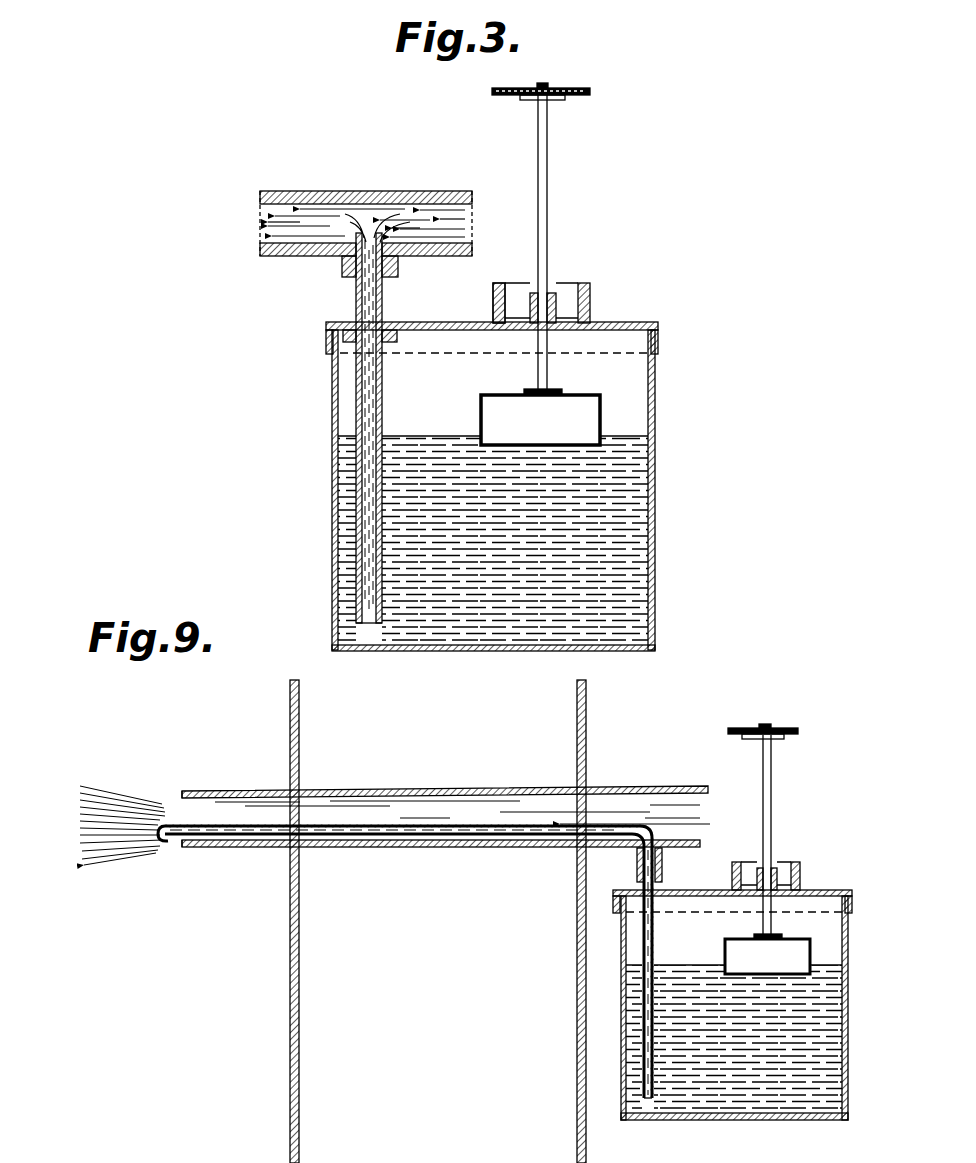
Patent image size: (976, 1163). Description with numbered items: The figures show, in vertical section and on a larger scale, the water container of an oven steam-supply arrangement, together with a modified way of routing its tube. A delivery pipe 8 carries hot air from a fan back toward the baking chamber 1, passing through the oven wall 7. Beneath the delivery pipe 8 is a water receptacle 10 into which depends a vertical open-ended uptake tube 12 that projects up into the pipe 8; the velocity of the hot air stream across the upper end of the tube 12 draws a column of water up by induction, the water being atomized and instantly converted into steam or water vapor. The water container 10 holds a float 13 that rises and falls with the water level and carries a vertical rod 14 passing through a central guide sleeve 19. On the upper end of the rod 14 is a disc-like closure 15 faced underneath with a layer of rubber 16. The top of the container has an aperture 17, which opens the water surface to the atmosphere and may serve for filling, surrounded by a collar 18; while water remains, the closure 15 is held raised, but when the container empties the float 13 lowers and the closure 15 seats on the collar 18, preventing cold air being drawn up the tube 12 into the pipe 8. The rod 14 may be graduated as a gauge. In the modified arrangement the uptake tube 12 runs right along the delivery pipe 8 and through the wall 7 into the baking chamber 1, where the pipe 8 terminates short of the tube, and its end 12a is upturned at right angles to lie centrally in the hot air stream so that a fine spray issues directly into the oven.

In FIG. 9, the baking chamber 1 is at (262, 746).
In FIG. 9, the oven wall 7 is at (548, 730).
In FIG. 3, the delivery pipe 8 is at (340, 191).
In FIG. 9, the delivery pipe 8 is at (643, 788).
In FIG. 3, the water receptacle 10 is at (333, 508).
In FIG. 9, the water receptacle 10 is at (846, 1116).
In FIG. 3, the uptake tube 12 is at (357, 368).
In FIG. 9, the uptake tube 12 is at (330, 824).
In FIG. 9, the end of tube 12a is at (157, 838).
In FIG. 3, the float 13 is at (580, 410).
In FIG. 9, the float 13 is at (767, 954).
In FIG. 3, the vertical rod 14 is at (548, 211).
In FIG. 9, the vertical rod 14 is at (767, 835).
In FIG. 3, the disc-like closure 15 is at (582, 92).
In FIG. 9, the disc-like closure 15 is at (763, 729).
In FIG. 3, the layer of rubber 16 is at (588, 98).
In FIG. 9, the layer of rubber 16 is at (763, 736).
In FIG. 3, the aperture 17 is at (590, 312).
In FIG. 9, the aperture 17 is at (766, 876).
In FIG. 3, the collar 18 is at (493, 292).
In FIG. 3, the central guide sleeve 19 is at (556, 302).
In FIG. 9, the central guide sleeve 19 is at (767, 879).